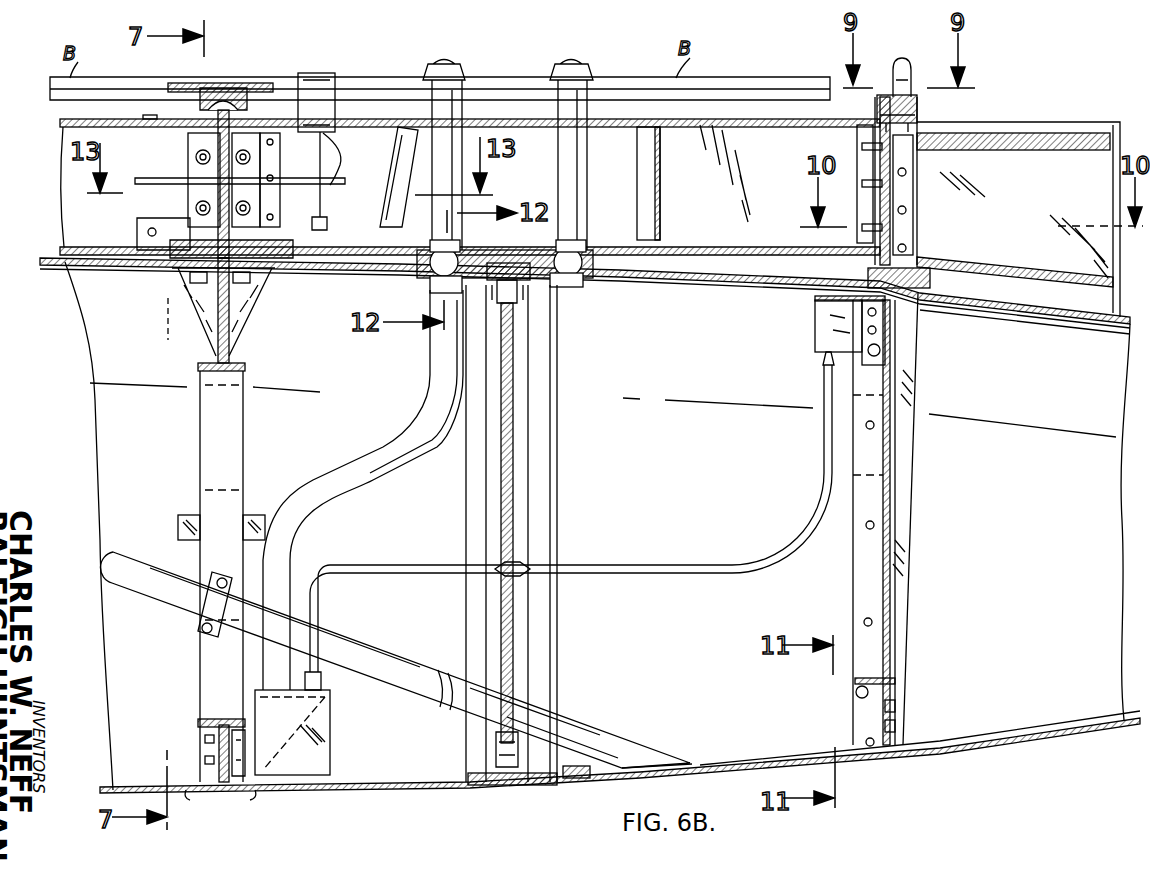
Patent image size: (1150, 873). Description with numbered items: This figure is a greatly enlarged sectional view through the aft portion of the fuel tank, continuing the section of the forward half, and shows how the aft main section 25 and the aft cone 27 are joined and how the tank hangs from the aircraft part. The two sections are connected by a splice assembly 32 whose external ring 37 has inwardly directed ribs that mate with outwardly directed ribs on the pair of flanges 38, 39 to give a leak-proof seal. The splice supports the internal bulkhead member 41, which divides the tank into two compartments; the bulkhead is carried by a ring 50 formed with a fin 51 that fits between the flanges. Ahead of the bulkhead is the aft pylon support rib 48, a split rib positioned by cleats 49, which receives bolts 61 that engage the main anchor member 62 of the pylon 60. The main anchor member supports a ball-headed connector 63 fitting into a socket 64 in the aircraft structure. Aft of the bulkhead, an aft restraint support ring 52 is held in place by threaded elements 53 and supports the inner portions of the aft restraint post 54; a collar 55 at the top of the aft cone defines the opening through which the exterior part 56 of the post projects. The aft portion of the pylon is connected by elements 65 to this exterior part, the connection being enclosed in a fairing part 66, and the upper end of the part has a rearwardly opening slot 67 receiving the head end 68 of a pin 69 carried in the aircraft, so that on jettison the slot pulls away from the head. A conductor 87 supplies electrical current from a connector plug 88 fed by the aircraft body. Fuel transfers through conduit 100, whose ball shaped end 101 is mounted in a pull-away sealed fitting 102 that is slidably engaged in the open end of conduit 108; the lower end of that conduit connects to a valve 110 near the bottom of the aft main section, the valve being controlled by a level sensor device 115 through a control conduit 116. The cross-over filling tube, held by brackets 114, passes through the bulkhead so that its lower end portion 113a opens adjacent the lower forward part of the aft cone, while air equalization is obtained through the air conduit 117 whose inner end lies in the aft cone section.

The aft main section 25 is at (62, 343).
The aft cone 27 is at (1035, 749).
The splice assembly 32 is at (494, 800).
The external ring 37 is at (530, 790).
The flange 38 is at (466, 790).
The flange 39 is at (547, 788).
The internal bulkhead member 41 is at (510, 425).
The aft pylon support rib 48 is at (207, 422).
The cleats 49 is at (150, 278).
The ring 50 is at (513, 747).
The fin 51 is at (500, 790).
The aft restraint support ring 52 is at (863, 702).
The threaded elements 53 is at (866, 620).
The aft restraint post 54 is at (912, 444).
The collar 55 is at (927, 280).
The exterior part 56 is at (910, 190).
The pylon 60 is at (57, 211).
The bolts 61 is at (242, 312).
The main anchor member 62 is at (178, 161).
The ball-headed connector 63 is at (240, 92).
The socket 64 is at (222, 86).
The elements 65 is at (890, 228).
The fairing part 66 is at (1063, 123).
The rearwardly opening slot 67 is at (918, 120).
The head end 68 is at (918, 110).
The pin 69 is at (900, 63).
The conductor 87 is at (135, 184).
The connector plug 88 is at (323, 83).
The conduit 100 is at (453, 108).
The ball shaped end 101 is at (417, 282).
The pull-away sealed fitting 102 is at (430, 299).
The conduit 108 is at (360, 455).
The valve 110 is at (326, 716).
The brace 113a is at (650, 755).
The brackets 114 is at (200, 620).
The level sensor device 115 is at (813, 335).
The control conduit 116 is at (625, 567).
The air conduit 117 is at (585, 168).